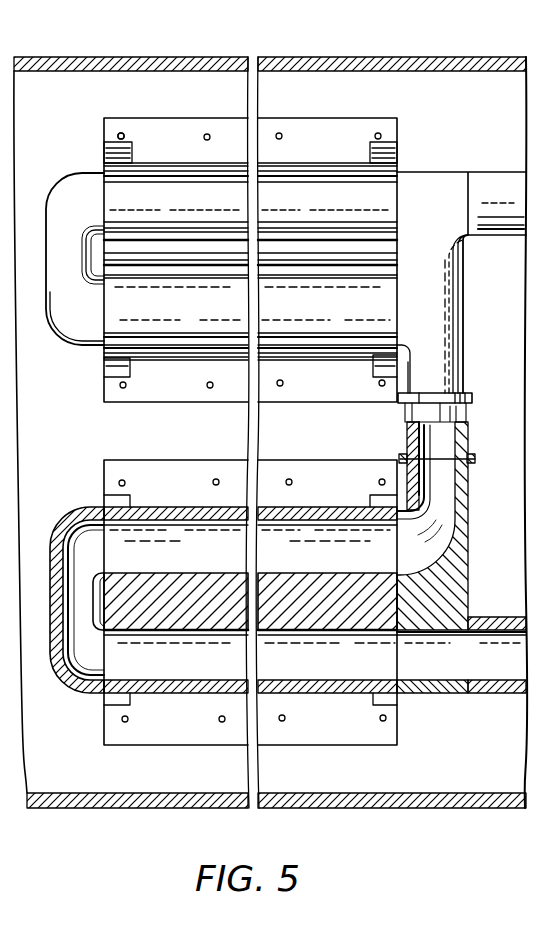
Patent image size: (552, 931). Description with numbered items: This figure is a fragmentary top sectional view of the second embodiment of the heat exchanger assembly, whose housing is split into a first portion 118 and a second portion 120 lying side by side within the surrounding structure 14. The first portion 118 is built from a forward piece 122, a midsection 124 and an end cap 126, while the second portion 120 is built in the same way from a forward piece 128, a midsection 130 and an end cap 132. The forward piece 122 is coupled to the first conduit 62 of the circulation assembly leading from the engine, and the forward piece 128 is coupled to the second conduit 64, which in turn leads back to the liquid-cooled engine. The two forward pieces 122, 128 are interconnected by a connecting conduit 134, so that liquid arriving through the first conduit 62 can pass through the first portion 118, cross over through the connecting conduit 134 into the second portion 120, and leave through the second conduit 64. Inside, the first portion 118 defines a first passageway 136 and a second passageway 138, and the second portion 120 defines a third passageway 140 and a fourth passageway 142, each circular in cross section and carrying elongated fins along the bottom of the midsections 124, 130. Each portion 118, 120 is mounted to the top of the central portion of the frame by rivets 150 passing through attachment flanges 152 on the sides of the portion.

The housing wall 14 is at (190, 54).
The first conduit 62 is at (516, 169).
The second conduit 64 is at (500, 614).
The first portion 118 is at (352, 107).
The second portion 120 is at (300, 748).
The forward piece 122 is at (422, 197).
The midsection 124 is at (285, 172).
The end cap 126 is at (76, 197).
The forward piece 128 is at (471, 485).
The midsection 130 is at (302, 693).
The end cap 132 is at (80, 511).
The connecting conduit 134 is at (466, 401).
The first passageway 136 is at (193, 195).
The second passageway 138 is at (194, 312).
The third passageway 140 is at (197, 547).
The fourth passageway 142 is at (200, 663).
The rivets 150 is at (123, 131).
The attachment flanges 152 is at (115, 124).